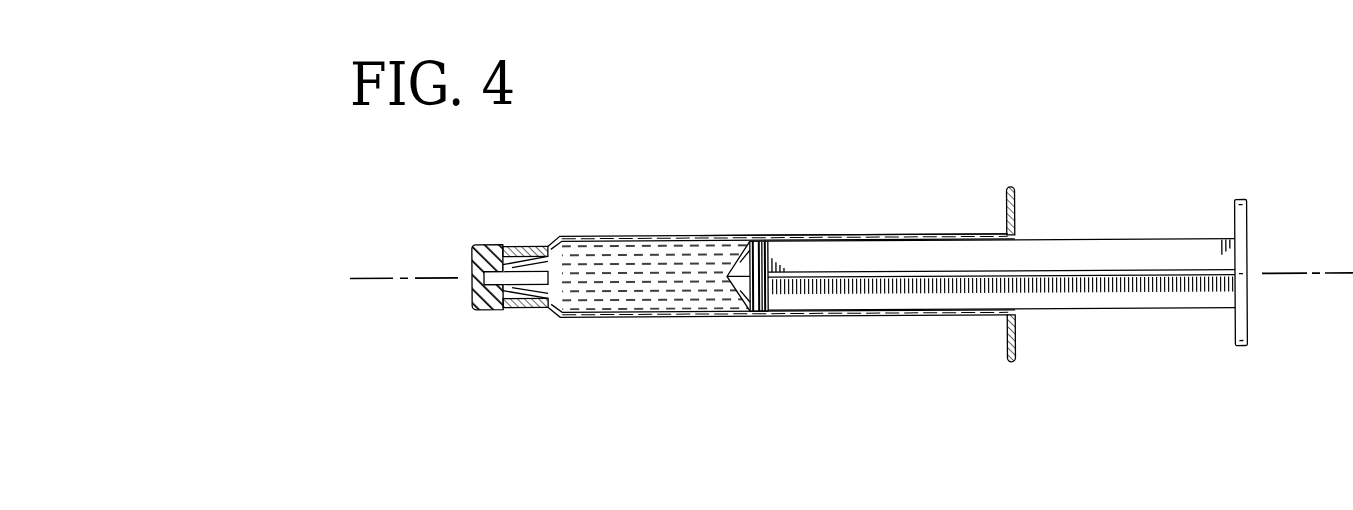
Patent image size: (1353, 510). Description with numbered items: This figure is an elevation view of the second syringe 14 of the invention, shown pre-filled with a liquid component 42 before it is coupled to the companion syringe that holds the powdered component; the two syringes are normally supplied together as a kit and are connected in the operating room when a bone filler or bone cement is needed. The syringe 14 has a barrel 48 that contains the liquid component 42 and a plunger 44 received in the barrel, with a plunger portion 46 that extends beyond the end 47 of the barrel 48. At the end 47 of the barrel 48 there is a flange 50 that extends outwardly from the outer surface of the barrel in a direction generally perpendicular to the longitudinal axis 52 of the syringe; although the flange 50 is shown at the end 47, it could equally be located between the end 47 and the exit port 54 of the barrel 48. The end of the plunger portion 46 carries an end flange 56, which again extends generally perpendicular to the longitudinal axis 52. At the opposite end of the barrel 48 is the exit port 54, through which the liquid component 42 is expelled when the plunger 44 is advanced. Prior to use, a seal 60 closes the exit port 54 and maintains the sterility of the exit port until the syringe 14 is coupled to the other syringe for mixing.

The syringe 14 is at (680, 234).
The liquid component 42 is at (623, 296).
The plunger 44 is at (733, 260).
The plunger portion 46 is at (1103, 240).
The end of barrel 47 is at (1015, 320).
The barrel 48 is at (881, 234).
The flange 50 is at (1012, 200).
The longitudinal axis 52 is at (382, 276).
The exit port 54 is at (532, 252).
The end flange 56 is at (1247, 228).
The seal 60 is at (483, 244).